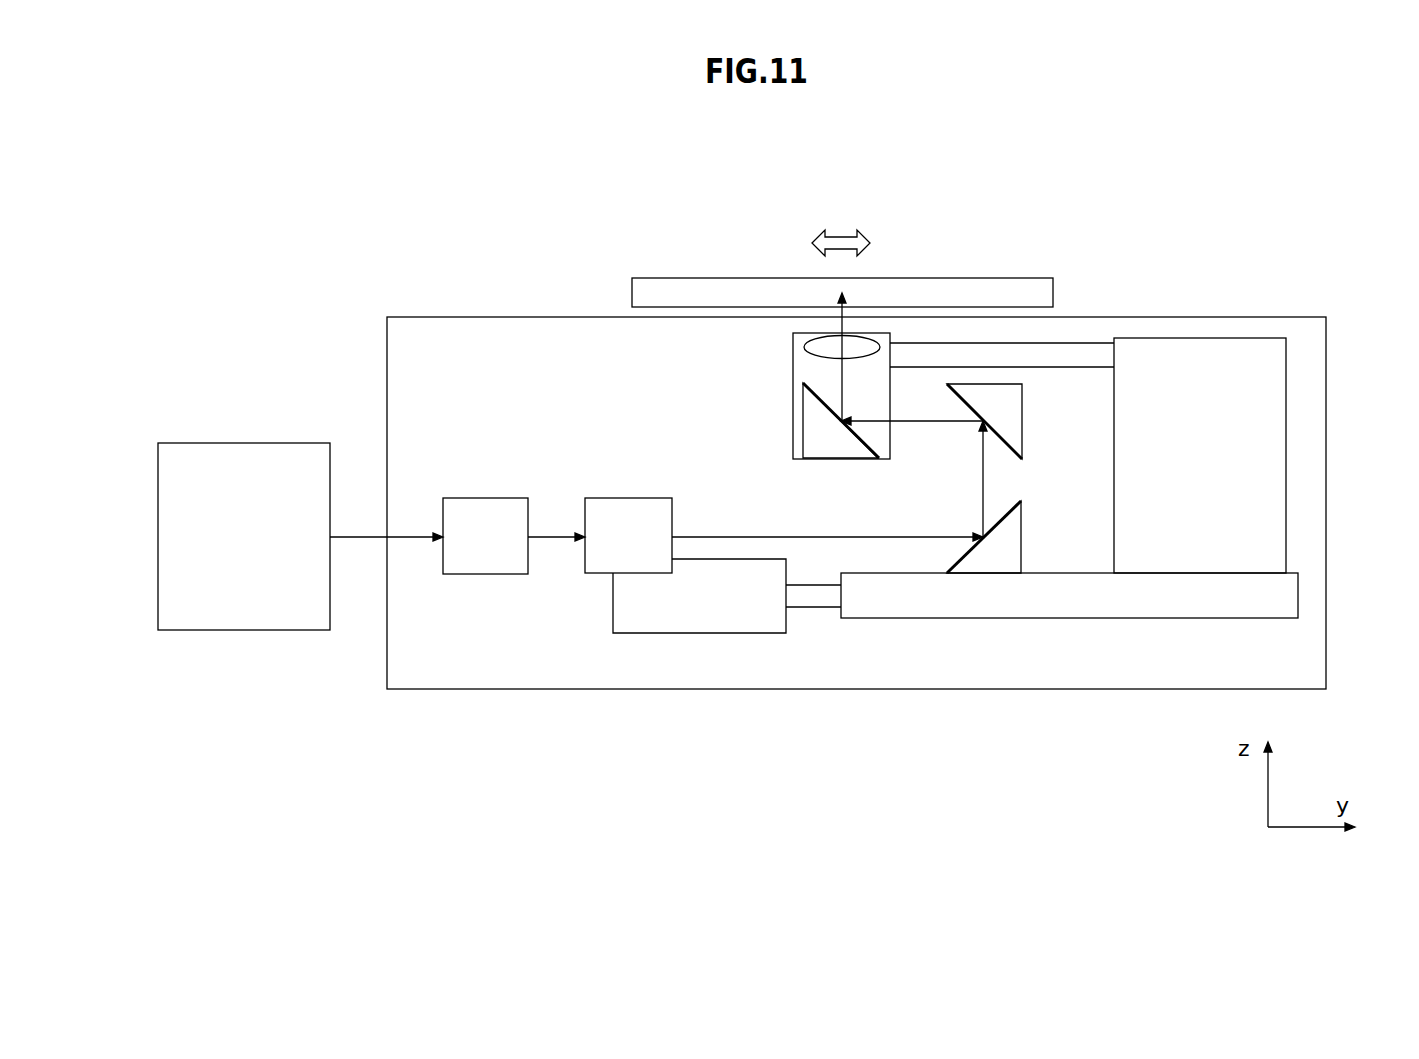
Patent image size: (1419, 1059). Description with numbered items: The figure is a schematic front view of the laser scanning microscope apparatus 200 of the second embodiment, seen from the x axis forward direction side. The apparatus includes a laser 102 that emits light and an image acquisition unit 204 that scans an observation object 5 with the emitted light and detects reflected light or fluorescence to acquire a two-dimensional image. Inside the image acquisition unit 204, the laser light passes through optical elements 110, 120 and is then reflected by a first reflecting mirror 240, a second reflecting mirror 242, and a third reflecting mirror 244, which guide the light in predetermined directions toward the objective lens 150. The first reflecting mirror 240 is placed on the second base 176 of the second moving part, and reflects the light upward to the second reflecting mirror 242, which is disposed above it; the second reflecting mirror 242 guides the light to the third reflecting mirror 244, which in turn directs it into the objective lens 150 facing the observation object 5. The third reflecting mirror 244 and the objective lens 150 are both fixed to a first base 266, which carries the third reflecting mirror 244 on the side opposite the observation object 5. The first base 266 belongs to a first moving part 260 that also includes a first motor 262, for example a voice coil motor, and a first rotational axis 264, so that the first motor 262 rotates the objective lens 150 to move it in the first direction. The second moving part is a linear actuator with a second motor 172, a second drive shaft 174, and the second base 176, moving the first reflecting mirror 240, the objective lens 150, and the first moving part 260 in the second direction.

The observation object 5 is at (963, 278).
The laser 102 is at (278, 443).
The optical element 110 is at (498, 498).
The optical element 120 is at (640, 498).
The objective lens 150 is at (805, 347).
The second motor 172 is at (733, 634).
The second drive shaft 174 is at (812, 608).
The second base 176 is at (1091, 621).
The laser scanning microscope apparatus 200 is at (1150, 148).
The image acquisition unit 204 is at (505, 317).
The first reflecting mirror 240 is at (1024, 500).
The second reflecting mirror 242 is at (1024, 425).
The third reflecting mirror 244 is at (830, 454).
The first moving part 260 is at (1174, 338).
The first motor 262 is at (1249, 337).
The first rotational axis 264 is at (1083, 343).
The first base 266 is at (795, 375).